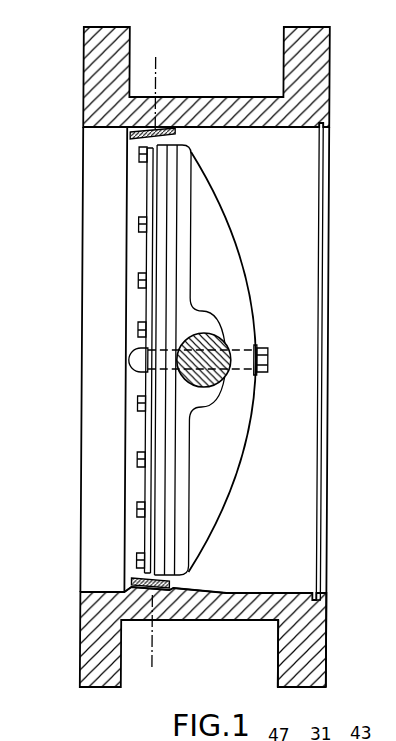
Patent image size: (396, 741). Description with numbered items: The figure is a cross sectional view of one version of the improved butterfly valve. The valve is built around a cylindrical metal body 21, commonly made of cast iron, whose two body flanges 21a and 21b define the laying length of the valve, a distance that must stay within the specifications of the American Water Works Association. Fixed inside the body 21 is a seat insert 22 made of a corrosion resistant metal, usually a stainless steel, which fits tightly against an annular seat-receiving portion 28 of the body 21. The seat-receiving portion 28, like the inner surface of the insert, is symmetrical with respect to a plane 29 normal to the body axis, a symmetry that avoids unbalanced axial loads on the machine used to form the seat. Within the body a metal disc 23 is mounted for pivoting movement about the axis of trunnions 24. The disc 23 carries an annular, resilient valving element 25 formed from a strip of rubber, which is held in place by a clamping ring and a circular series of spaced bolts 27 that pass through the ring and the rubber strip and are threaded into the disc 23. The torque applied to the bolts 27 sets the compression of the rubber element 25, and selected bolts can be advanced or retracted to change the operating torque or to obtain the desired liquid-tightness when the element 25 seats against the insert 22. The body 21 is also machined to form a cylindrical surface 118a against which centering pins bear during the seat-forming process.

The cylindrical metal body 21 is at (233, 622).
The body flange 21a is at (92, 653).
The body flange 21b is at (316, 667).
The seat insert 22 is at (133, 576).
The metal disc 23 is at (252, 432).
The trunnions 24 is at (226, 341).
The annular resilient valving element 25 is at (169, 487).
The bolts 27 is at (142, 218).
The seat-receiving portion 28 is at (163, 591).
The plane 29 is at (158, 657).
The cylindrical surface 118a is at (330, 130).